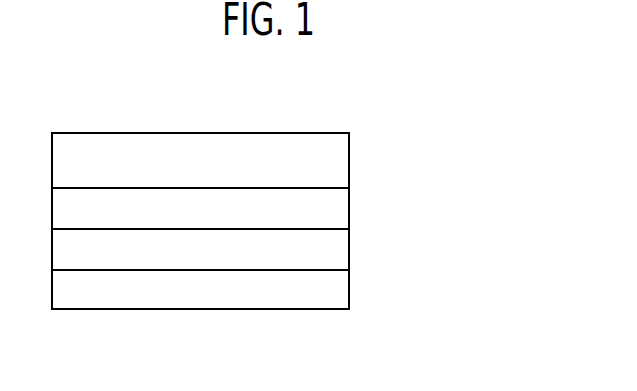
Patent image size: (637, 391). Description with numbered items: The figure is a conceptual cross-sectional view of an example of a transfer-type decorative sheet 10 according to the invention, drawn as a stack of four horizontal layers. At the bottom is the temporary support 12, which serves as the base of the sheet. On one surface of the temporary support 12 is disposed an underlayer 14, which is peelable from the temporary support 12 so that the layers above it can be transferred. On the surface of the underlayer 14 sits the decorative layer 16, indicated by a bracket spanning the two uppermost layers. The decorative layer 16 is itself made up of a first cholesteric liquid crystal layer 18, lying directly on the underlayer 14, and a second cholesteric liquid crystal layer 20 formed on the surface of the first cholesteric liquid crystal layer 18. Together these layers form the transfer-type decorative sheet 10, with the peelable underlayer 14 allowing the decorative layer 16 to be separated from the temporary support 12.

The transfer-type decorative sheet 10 is at (365, 108).
The temporary support 12 is at (340, 297).
The underlayer 14 is at (340, 253).
The decorative layer 16 is at (474, 180).
The first cholesteric liquid crystal layer 18 is at (340, 222).
The second cholesteric liquid crystal layer 20 is at (340, 165).